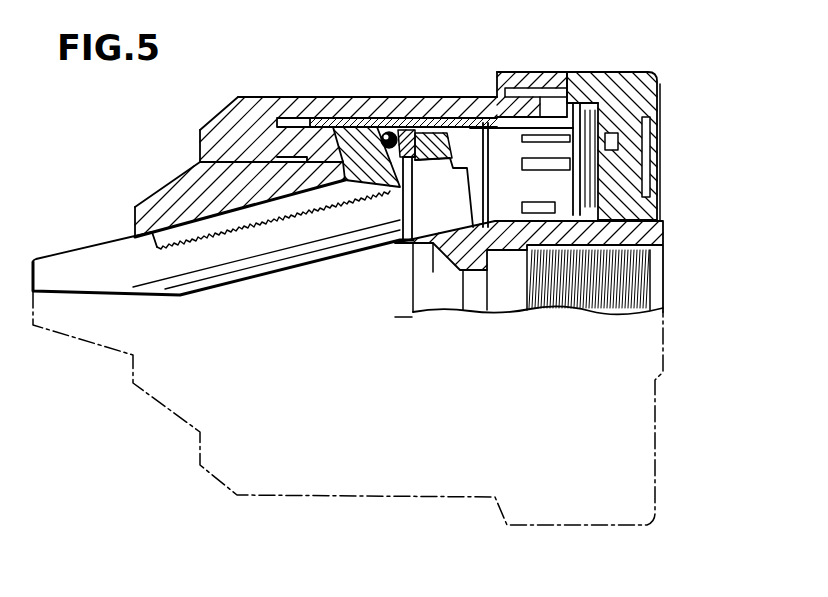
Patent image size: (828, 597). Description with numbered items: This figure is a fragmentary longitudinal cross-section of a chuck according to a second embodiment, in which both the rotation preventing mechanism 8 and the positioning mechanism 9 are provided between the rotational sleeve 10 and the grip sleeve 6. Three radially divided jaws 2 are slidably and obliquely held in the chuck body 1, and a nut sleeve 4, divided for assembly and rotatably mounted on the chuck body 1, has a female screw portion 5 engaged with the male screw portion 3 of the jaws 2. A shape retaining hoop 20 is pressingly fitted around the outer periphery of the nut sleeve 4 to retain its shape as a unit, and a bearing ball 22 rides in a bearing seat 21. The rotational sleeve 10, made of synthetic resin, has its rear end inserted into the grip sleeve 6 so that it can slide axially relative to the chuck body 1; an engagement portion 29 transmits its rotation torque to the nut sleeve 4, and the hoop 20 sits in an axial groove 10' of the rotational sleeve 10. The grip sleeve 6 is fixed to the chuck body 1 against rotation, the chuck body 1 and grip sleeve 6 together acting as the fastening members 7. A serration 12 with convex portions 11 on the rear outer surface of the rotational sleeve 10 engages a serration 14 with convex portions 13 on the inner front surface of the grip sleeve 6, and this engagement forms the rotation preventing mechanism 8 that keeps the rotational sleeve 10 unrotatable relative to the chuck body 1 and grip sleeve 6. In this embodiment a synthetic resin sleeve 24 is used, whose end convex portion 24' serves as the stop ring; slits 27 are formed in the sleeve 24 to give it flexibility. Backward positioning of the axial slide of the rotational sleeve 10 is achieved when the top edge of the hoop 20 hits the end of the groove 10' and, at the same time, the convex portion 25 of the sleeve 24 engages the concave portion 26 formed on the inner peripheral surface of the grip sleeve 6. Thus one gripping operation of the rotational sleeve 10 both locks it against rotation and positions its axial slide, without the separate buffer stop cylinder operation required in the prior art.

The chuck body 1 is at (152, 200).
The jaws 2 is at (60, 268).
The male screw portion 3 is at (192, 232).
The nut sleeve 4 is at (357, 128).
The female screw portion 5 is at (370, 200).
The grip sleeve 6 is at (660, 97).
The fastening members 7 is at (668, 235).
The rotation preventing mechanism 8 is at (489, 75).
The positioning mechanism 9 is at (580, 82).
The rotational sleeve 10 is at (335, 124).
The groove 10' is at (231, 95).
The convex portions 11 is at (506, 72).
The serration 12 is at (525, 72).
The convex portions 13 is at (557, 78).
The serration 14 is at (574, 72).
The shape retaining hoop 20 is at (313, 118).
The bearing seat 21 is at (396, 132).
The bearing ball 22 is at (385, 128).
The sleeve 24 is at (615, 159).
The convex portion 24' is at (501, 126).
The convex portion 25 is at (645, 102).
The concave portion 26 is at (592, 97).
The slits 27 is at (562, 138).
The engagement portion 29 is at (335, 150).